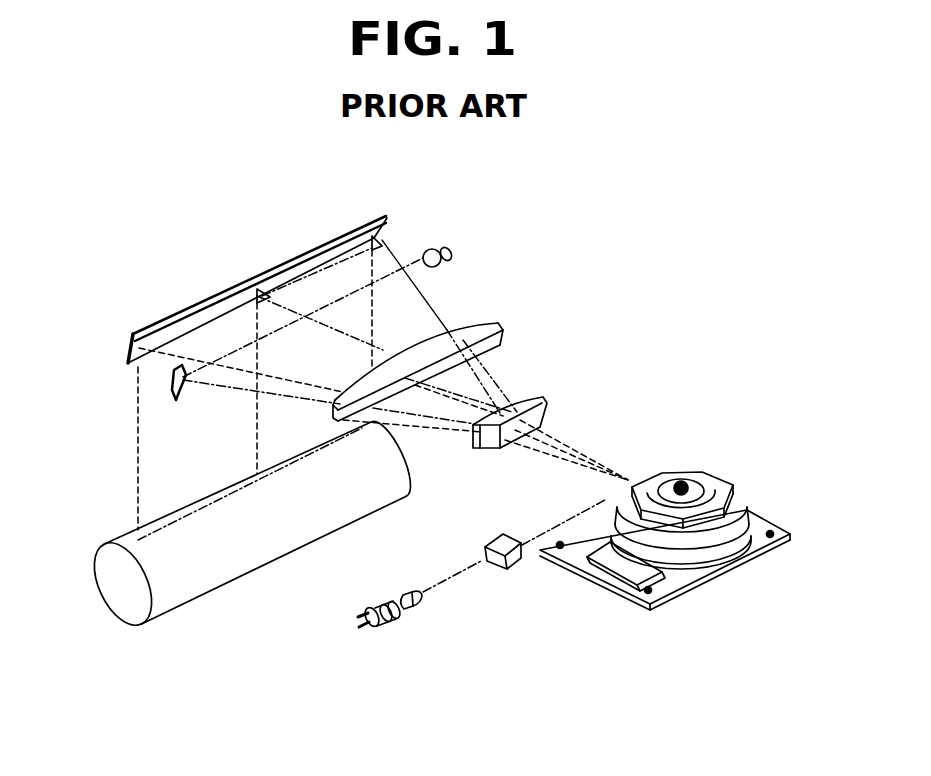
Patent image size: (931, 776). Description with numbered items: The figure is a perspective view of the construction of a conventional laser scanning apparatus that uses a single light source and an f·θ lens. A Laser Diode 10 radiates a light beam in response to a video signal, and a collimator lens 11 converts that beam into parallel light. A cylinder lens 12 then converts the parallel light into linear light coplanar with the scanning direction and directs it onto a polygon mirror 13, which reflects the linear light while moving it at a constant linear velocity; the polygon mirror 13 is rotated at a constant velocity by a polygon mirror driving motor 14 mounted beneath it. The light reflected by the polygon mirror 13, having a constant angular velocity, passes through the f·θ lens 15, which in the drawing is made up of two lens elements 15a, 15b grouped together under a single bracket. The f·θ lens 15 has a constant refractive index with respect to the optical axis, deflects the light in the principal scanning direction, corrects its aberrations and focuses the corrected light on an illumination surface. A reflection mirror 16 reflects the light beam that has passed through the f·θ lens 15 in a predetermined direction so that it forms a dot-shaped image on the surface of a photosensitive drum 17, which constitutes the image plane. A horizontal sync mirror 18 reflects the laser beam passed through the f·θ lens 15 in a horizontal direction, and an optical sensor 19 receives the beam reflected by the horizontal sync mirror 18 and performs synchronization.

The Laser Diode 10 is at (386, 630).
The collimator lens 11 is at (413, 607).
The cylinder lens 12 is at (520, 570).
The polygon mirror 13 is at (686, 472).
The polygon mirror driving motor 14 is at (733, 494).
The f·θ lens 15 is at (475, 358).
The first lens 15a is at (545, 410).
The second lens 15b is at (480, 327).
The reflection mirror 16 is at (205, 305).
The photosensitive drum 17 is at (200, 580).
The horizontal sync mirror 18 is at (170, 402).
The optical sensor 19 is at (443, 246).